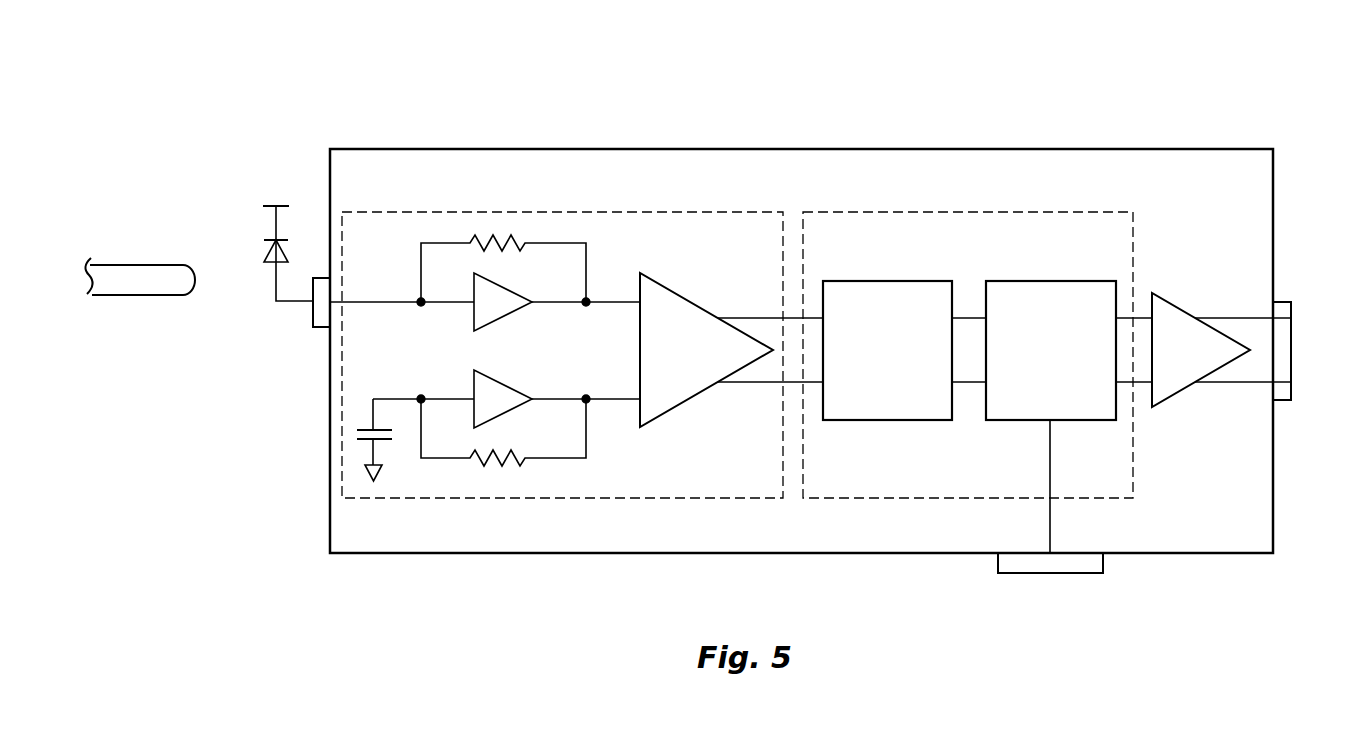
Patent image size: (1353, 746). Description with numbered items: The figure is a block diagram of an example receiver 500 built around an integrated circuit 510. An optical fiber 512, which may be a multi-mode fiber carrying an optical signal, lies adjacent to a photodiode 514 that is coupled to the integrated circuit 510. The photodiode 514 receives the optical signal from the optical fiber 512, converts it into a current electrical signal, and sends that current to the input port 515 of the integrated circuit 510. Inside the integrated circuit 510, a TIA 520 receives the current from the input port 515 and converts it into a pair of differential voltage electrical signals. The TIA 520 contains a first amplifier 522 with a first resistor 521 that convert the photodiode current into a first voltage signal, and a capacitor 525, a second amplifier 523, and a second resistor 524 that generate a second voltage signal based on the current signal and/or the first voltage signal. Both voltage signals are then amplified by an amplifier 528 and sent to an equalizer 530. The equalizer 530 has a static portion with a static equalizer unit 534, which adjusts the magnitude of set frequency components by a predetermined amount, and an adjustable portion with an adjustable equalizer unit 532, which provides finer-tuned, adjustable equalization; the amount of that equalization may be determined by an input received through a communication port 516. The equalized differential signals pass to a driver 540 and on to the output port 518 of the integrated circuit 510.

The receiver 500 is at (1043, 90).
The integrated circuit 510 is at (446, 149).
The optical fiber 512 is at (113, 265).
The photodiode 514 is at (264, 252).
The input port 515 is at (312, 312).
The communication port 516 is at (1103, 562).
The output port 518 is at (1283, 302).
The TIA 520 is at (607, 212).
The first resistor 521 is at (518, 243).
The first amplifier 522 is at (508, 317).
The second amplifier 523 is at (508, 384).
The second resistor 524 is at (523, 460).
The capacitor 525 is at (360, 429).
The amplifier 528 is at (667, 408).
The equalizer 530 is at (1020, 212).
The adjustable equalizer unit 532 is at (1051, 350).
The static equalizer unit 534 is at (887, 350).
The driver 540 is at (1187, 307).